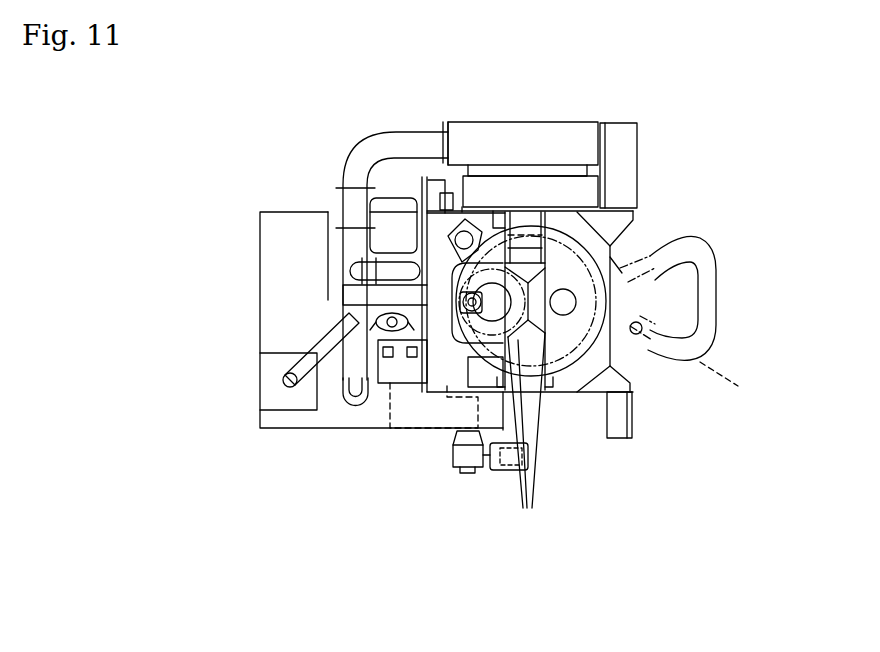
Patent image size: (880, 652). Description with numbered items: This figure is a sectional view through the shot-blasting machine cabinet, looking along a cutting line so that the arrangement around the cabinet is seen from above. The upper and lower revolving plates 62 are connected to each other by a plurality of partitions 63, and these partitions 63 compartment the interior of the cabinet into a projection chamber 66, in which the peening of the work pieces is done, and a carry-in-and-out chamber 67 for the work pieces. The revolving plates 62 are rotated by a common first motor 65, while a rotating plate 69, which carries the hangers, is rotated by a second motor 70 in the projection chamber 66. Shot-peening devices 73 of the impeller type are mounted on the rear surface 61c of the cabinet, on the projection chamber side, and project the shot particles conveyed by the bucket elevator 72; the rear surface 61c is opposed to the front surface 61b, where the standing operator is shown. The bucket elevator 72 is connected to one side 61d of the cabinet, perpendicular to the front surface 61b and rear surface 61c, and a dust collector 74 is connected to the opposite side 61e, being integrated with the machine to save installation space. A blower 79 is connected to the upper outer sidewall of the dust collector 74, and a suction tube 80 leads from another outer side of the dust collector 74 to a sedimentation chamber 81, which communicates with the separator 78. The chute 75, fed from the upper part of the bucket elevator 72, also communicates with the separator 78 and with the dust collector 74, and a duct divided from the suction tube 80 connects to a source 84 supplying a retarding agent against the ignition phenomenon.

The suction tube 80 is at (352, 136).
The sedimentation chamber 81 is at (352, 412).
The source for supplying a retarding agent 84 is at (272, 428).
The chute 75 is at (468, 357).
The shot-peening devices 73 is at (417, 298).
The second motor 70 is at (458, 318).
The separator 78 is at (442, 385).
The rear surface 61c is at (452, 262).
The blower 79 is at (457, 188).
The first motor 65 is at (452, 228).
The projection chamber 66 is at (470, 270).
The dust collector 74 is at (520, 116).
The revolving plates 62 is at (599, 207).
The side of the cabinet 61e is at (557, 238).
The carry-in-and-out chamber 67 is at (577, 261).
The partitions 63 is at (525, 376).
The rotating plate 69 is at (576, 302).
The bucket elevator 72 is at (446, 439).
The side of the cabinet 61d is at (567, 393).
The front surface 61b is at (636, 272).